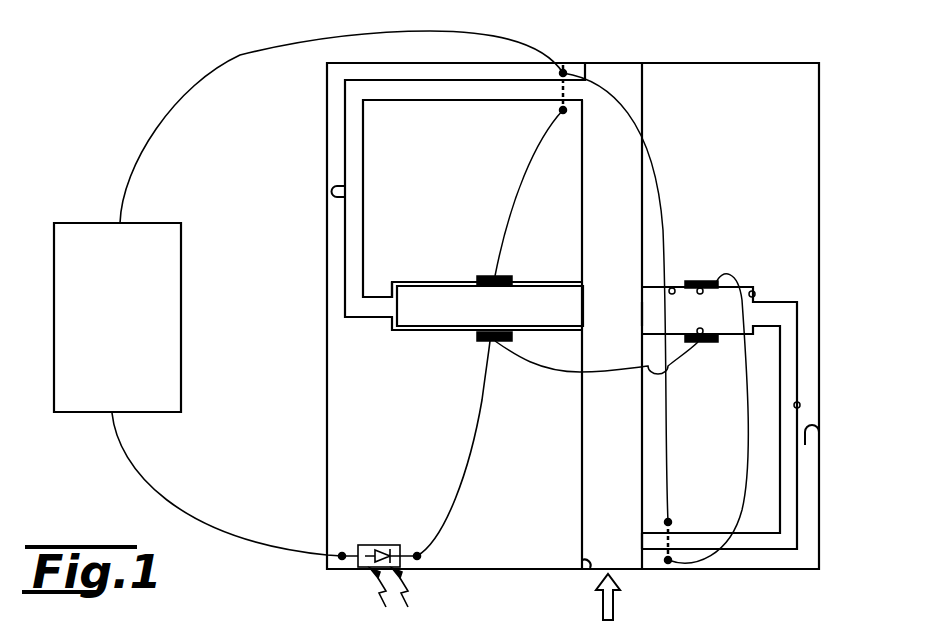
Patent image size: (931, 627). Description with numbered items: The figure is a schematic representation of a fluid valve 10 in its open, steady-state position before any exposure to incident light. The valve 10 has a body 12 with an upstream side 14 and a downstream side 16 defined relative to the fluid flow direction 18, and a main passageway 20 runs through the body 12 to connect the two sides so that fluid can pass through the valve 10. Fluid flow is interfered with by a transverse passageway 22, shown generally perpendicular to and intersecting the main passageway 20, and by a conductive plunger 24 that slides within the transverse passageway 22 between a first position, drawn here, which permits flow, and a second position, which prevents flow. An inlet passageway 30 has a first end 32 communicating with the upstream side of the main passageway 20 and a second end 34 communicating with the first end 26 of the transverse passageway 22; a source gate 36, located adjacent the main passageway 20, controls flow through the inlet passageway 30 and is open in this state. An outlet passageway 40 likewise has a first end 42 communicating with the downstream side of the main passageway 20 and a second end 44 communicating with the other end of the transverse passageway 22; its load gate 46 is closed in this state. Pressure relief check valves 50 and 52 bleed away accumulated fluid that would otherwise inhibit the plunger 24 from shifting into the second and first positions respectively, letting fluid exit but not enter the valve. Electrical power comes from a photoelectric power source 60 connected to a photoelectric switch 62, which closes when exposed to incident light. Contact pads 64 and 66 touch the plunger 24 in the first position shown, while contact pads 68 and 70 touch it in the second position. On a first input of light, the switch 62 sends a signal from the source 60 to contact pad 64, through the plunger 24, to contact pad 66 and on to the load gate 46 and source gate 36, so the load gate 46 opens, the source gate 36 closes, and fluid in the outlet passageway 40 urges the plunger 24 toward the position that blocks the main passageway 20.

The valve 10 is at (201, 46).
The body 12 is at (326, 459).
The upstream side 14 is at (530, 570).
The downstream side 16 is at (762, 63).
The fluid flow direction 18 is at (613, 602).
The main passageway 20 is at (584, 569).
The transverse passageway 22 is at (675, 287).
The plunger 24 is at (548, 319).
The first end 26 is at (756, 290).
The inlet passageway 30 is at (800, 404).
The first end 32 is at (649, 546).
The second end 34 is at (790, 304).
The source gate 36 is at (673, 530).
The outlet passageway 40 is at (347, 135).
The first end 42 is at (568, 102).
The second end 44 is at (375, 300).
The load gate 46 is at (560, 111).
The pressure relief check valve 50 is at (816, 436).
The pressure relief check valve 52 is at (333, 184).
The photoelectric power source 60 is at (181, 366).
The photoelectric switch 62 is at (393, 545).
The contact pad 64 is at (487, 341).
The contact pad 66 is at (487, 275).
The contact pad 68 is at (703, 343).
The contact pad 70 is at (703, 280).